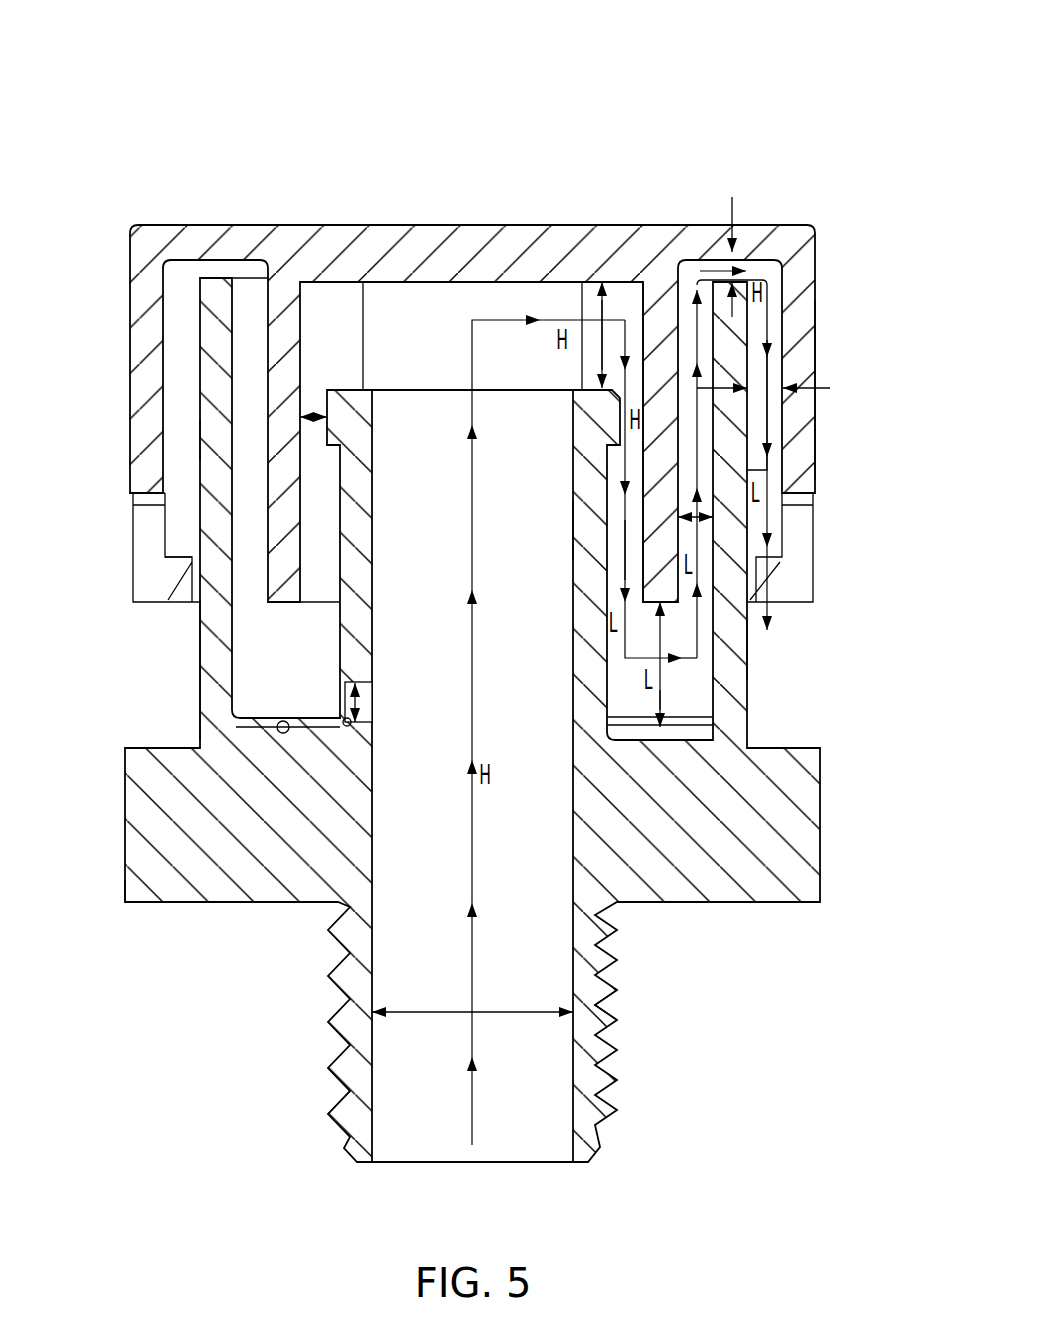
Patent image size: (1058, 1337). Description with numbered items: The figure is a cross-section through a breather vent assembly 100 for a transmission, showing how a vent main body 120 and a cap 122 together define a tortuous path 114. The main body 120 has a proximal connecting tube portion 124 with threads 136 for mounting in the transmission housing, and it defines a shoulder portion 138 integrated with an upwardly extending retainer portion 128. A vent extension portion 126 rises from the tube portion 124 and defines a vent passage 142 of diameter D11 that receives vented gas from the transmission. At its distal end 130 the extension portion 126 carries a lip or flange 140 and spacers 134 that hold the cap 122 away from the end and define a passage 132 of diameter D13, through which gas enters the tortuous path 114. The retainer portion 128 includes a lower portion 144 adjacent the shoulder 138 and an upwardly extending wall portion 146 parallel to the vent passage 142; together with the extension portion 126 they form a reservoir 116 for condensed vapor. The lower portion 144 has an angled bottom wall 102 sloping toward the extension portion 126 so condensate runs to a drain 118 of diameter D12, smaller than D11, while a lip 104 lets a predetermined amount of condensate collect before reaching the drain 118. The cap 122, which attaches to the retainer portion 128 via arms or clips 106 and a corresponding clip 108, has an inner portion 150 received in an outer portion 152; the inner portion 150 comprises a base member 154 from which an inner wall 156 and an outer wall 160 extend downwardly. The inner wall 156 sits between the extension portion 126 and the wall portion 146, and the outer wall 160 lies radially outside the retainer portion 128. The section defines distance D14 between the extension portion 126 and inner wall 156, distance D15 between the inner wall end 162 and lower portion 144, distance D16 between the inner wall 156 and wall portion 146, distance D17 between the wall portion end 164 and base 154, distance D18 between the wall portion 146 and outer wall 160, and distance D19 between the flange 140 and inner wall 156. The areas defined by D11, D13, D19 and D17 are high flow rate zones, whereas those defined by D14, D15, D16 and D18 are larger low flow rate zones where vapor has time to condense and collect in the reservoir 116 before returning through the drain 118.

The breather vent assembly 100 is at (735, 80).
The angled bottom wall 102 is at (262, 733).
The lip 104 is at (285, 735).
The arms or clips 106 is at (167, 572).
The clip 108 is at (200, 442).
The tortuous path 114 is at (768, 373).
The reservoir 116 is at (283, 705).
The drain 118 is at (345, 728).
The vent main body 120 is at (826, 845).
The cap 122 is at (163, 202).
The connecting tube portion 124 is at (620, 1068).
The vent extension portion 126 is at (572, 525).
The retainer portion 128 is at (200, 652).
The distal end 130 is at (432, 307).
The passage 132 is at (574, 306).
The spacer 134 is at (465, 282).
The threads 136 is at (333, 1108).
The shoulder portion 138 is at (138, 888).
The flange 140 is at (352, 388).
The vent passage 142 is at (520, 1128).
The lower portion 144 is at (703, 737).
The upwardly extending wall portion 146 is at (748, 647).
The inner portion 150 is at (657, 302).
The outer portion 152 is at (818, 290).
The base member 154 is at (573, 245).
The inner wall 156 is at (168, 560).
The outer wall 160 is at (128, 448).
The end of inner wall 162 is at (285, 600).
The end of upwardly extending wall portion 164 is at (222, 292).
The vent passage diameter D11 is at (515, 1010).
The drain diameter D12 is at (360, 703).
The passage diameter D13 is at (608, 312).
The distance between vent extension portion and inner wall D14 is at (680, 520).
The distance between inner wall end and lower portion D15 is at (662, 698).
The distance between inner wall and wall portion D16 is at (712, 520).
The distance between wall portion end and base D17 is at (736, 212).
The distance between wall portion and outer wall D18 is at (830, 390).
The distance between flange and inner wall D19 is at (313, 413).